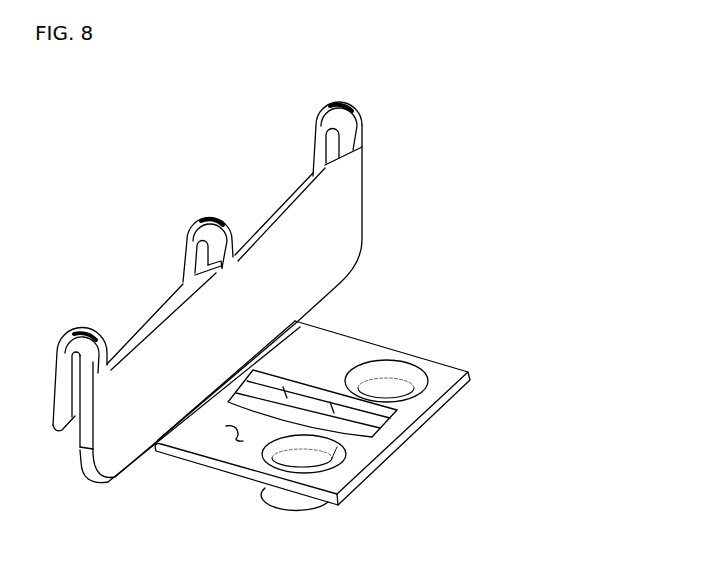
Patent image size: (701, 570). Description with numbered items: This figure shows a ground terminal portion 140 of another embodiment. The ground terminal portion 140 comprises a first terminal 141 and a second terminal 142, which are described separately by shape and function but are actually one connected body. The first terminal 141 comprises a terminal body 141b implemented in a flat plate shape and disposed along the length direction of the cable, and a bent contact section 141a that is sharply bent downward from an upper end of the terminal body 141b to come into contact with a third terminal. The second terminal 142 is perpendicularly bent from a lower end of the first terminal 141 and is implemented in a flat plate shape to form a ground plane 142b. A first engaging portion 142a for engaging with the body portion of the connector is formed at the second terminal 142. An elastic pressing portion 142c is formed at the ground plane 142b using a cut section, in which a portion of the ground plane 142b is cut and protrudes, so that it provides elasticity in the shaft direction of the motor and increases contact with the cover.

The ground terminal portion 140 is at (489, 167).
The first terminal 141 is at (289, 292).
The bent contact section 141a is at (314, 151).
The terminal body 141b is at (364, 192).
The second terminal 142 is at (407, 412).
The first engaging portion 142a is at (347, 446).
The ground plane 142b is at (232, 433).
The elastic pressing portion 142c is at (309, 402).